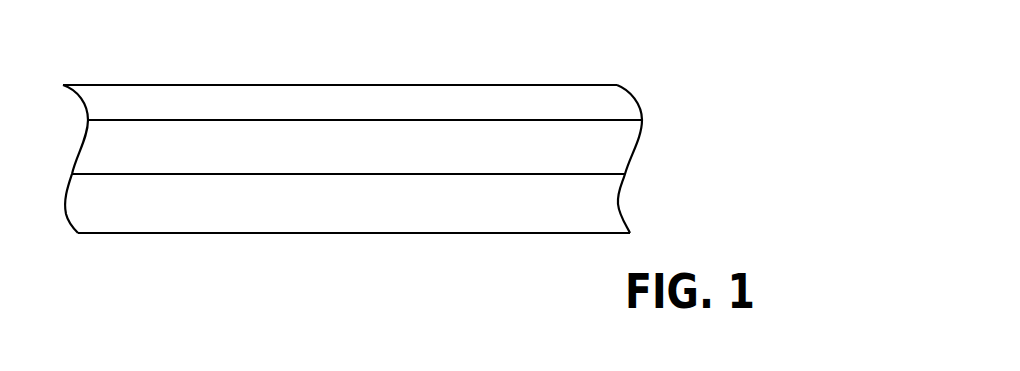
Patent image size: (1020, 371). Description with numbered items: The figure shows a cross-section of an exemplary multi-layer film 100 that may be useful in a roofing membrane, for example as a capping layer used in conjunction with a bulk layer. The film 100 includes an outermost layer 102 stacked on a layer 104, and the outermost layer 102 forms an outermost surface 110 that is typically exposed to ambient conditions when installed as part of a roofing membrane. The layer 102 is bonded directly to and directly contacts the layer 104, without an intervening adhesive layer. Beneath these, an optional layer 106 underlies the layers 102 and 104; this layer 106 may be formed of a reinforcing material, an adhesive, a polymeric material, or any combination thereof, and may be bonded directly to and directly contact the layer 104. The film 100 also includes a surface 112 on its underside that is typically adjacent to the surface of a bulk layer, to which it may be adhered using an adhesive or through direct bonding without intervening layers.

The multi-layer film 100 is at (333, 33).
The outermost layer 102 is at (623, 105).
The layer 104 is at (623, 148).
The optional layer 106 is at (600, 210).
The outermost surface 110 is at (452, 84).
The surface 112 is at (383, 233).